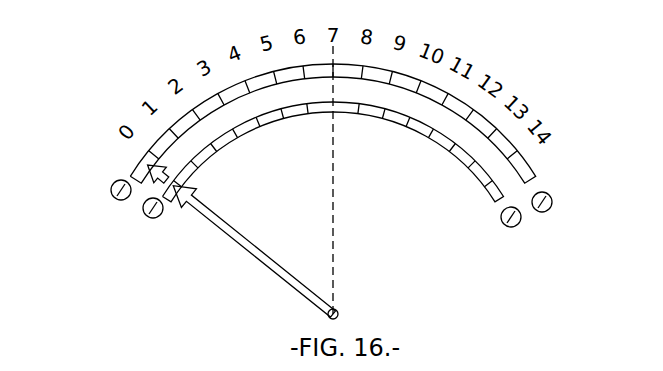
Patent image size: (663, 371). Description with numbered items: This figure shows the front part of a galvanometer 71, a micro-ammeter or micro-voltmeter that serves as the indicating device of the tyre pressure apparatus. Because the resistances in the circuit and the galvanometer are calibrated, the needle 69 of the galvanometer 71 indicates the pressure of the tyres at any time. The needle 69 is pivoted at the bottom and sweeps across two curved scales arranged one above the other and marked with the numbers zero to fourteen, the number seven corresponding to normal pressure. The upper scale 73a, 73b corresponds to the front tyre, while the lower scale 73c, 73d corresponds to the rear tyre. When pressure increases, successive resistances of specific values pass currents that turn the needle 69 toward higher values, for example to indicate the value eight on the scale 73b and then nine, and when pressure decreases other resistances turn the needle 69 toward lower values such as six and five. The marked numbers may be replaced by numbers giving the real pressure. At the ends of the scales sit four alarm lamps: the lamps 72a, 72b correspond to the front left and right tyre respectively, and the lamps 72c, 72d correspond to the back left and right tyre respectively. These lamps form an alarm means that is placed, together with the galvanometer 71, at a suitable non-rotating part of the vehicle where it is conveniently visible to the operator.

The needle 69 is at (274, 263).
The galvanometer 71 is at (243, 243).
The alarm lamp 72a is at (112, 186).
The alarm lamp 72b is at (552, 199).
The alarm lamp 72c is at (149, 217).
The alarm lamp 72d is at (510, 228).
The upper scale 73a is at (282, 78).
The upper scale 73b is at (390, 78).
The lower scale 73c is at (302, 112).
The lower scale 73d is at (362, 112).